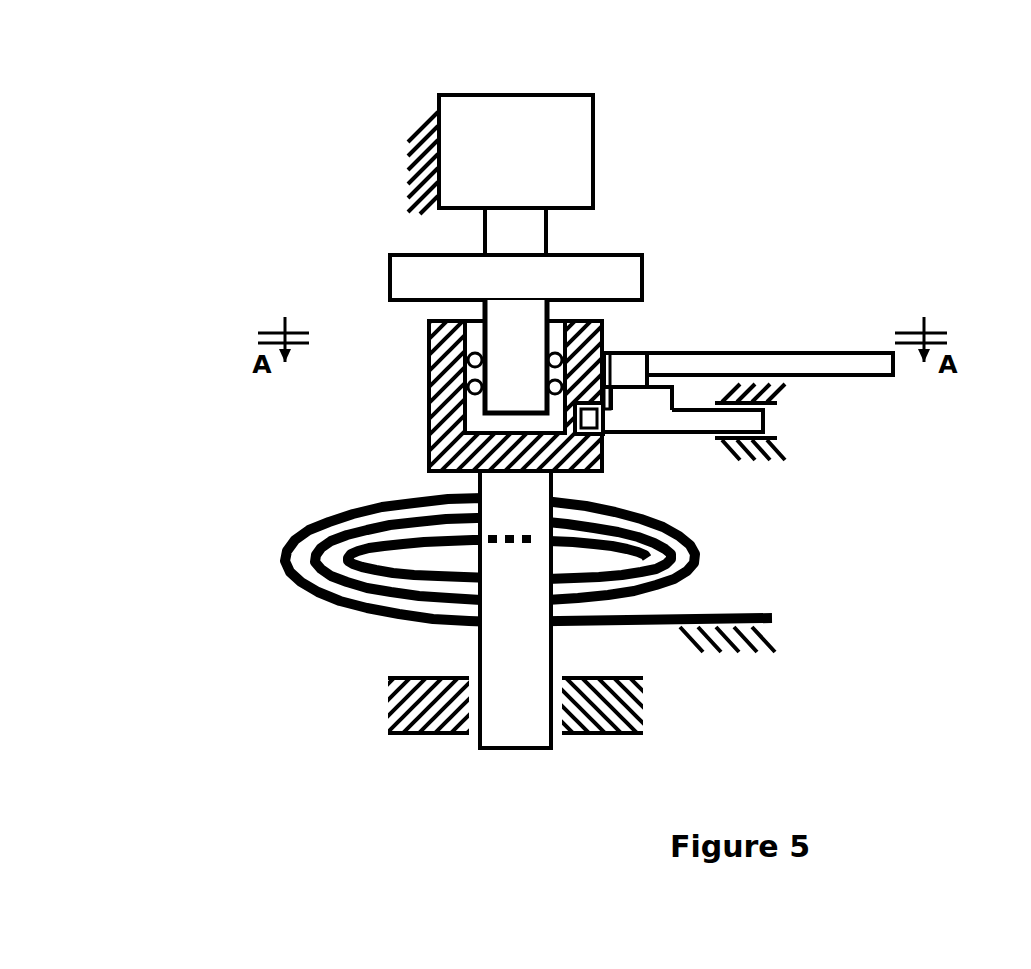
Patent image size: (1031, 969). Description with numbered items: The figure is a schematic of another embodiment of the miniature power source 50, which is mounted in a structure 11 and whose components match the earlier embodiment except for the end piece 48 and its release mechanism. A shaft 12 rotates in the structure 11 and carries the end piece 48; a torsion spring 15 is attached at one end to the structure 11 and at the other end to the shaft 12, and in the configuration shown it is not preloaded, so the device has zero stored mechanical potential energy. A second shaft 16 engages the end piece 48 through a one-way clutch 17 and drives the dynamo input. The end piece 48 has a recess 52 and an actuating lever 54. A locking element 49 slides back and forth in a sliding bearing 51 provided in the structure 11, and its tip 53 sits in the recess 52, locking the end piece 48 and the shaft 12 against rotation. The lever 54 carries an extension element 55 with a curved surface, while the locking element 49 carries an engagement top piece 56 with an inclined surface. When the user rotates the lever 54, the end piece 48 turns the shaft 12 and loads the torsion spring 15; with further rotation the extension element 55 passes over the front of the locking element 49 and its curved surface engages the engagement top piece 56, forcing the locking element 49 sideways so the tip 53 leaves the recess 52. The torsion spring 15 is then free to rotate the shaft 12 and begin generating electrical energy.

The power source 50 is at (834, 114).
The one-way clutch 17 is at (473, 372).
The shaft 16 is at (512, 340).
The recess 52 is at (606, 352).
The extension element 55 is at (630, 366).
The actuating lever 54 is at (793, 368).
The end piece 48 is at (440, 422).
The locking element 49 is at (710, 423).
The sliding bearing 51 is at (777, 433).
The structure 11 is at (778, 469).
The tip 53 is at (592, 422).
The engagement top piece 56 is at (637, 398).
The torsion spring 15 is at (333, 617).
The shaft 12 is at (513, 695).